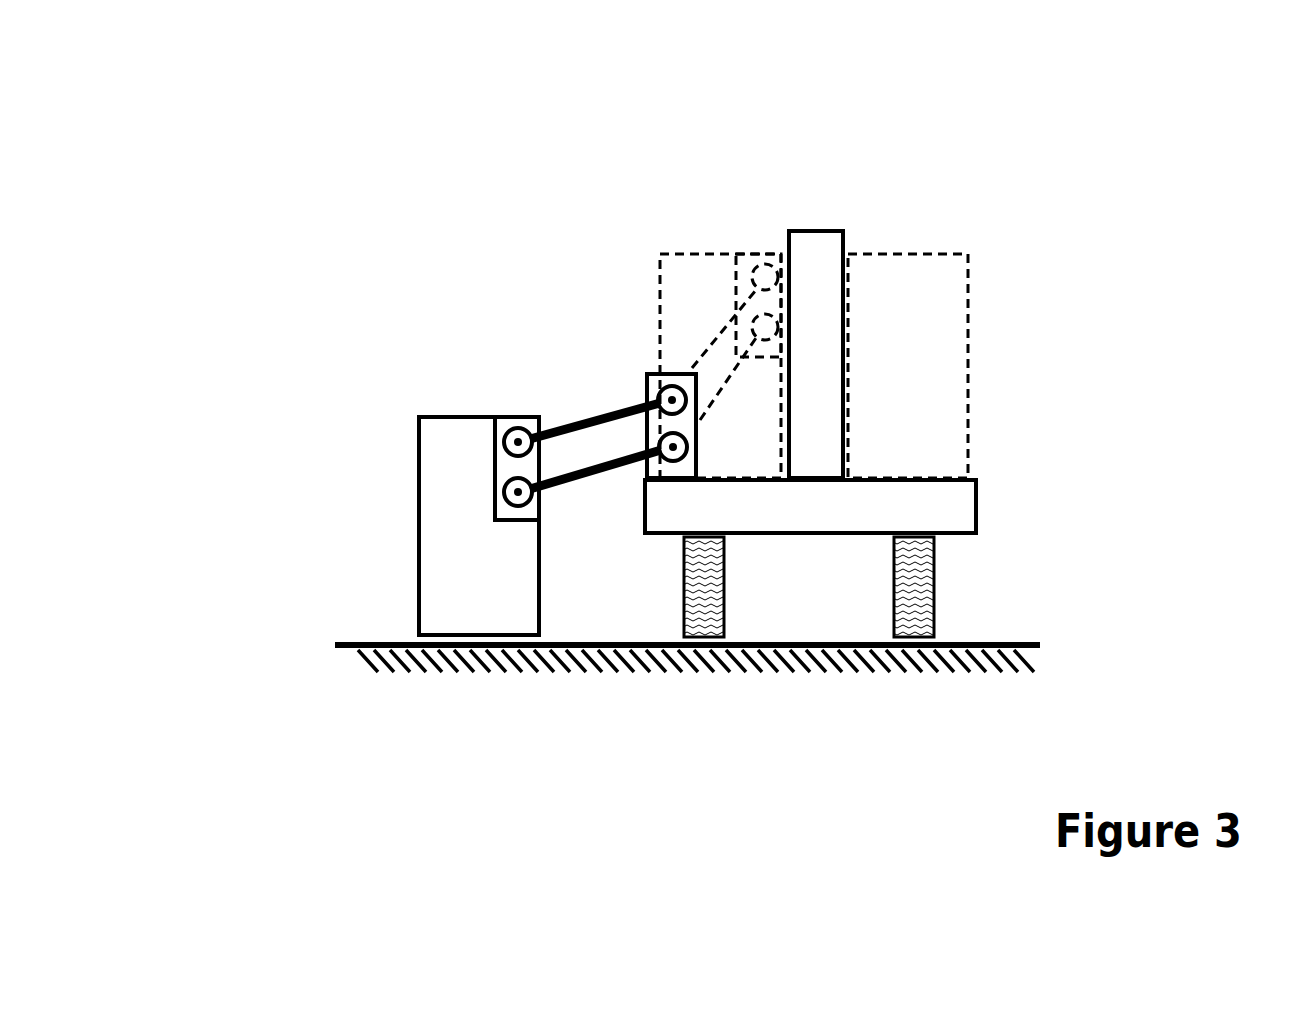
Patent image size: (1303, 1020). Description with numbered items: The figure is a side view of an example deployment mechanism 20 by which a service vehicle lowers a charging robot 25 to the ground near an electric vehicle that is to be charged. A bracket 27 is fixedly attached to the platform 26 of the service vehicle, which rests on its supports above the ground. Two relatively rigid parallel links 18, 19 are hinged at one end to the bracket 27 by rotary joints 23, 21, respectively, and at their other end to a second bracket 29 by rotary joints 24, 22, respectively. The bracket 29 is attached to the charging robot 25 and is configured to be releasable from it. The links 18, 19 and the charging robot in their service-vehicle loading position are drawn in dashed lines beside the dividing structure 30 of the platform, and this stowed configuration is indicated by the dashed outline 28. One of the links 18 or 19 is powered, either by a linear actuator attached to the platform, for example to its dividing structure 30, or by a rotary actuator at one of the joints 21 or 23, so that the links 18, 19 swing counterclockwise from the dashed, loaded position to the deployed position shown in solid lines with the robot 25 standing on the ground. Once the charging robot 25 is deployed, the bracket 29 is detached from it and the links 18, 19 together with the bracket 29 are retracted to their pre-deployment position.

The link 18 is at (615, 445).
The link 19 is at (563, 418).
The deployment mechanism 20 is at (265, 148).
The rotary joint 21 is at (672, 400).
The rotary joint 22 is at (518, 442).
The rotary joint 23 is at (673, 447).
The rotary joint 24 is at (518, 492).
The charging robot 25 is at (447, 542).
The platform 26 is at (932, 510).
The bracket 27 is at (640, 365).
The raised position of mounting block 28 is at (707, 267).
The bracket 29 is at (515, 532).
The dividing structure 30 is at (816, 283).